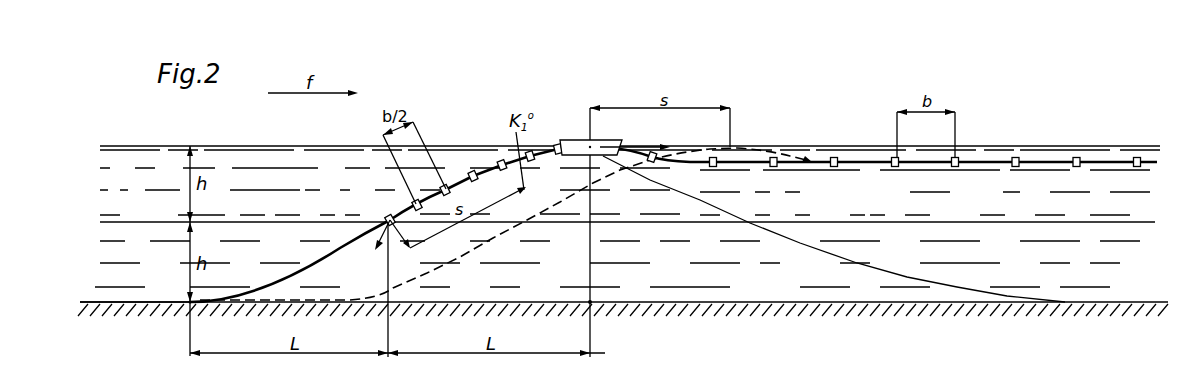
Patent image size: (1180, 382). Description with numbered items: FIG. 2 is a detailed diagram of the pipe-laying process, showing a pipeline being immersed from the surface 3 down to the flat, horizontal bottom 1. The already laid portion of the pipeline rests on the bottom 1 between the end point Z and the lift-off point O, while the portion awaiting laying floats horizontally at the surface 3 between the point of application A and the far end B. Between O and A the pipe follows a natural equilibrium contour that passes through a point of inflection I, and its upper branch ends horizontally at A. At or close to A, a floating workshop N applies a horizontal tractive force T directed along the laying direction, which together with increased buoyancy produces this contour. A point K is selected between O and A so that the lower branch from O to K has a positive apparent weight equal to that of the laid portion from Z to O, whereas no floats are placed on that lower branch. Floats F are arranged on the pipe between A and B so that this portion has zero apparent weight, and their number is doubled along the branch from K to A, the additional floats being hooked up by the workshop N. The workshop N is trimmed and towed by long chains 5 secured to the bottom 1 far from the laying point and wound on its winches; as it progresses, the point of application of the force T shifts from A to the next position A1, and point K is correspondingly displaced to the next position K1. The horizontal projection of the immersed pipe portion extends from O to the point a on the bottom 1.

The bottom 1 is at (723, 303).
The surface 3 is at (273, 147).
The towing chains 5 is at (860, 262).
The point of application of the tractive force A is at (590, 147).
The next position of the point of application A1 is at (734, 149).
The end of the pipe portion awaiting to be laid down B is at (1120, 164).
The floats F is at (496, 166).
The point of inflection I is at (383, 214).
The point along the immersed pipe portion K is at (378, 246).
The next position of point K K1 is at (523, 223).
The floating workshop N is at (578, 153).
The lift-off point of the pipeline from the bottom O is at (188, 305).
The horizontal tractive force T is at (668, 147).
The end of the already laid down pipeline portion Z is at (115, 302).
The horizontal projection point of A on the bottom a is at (594, 303).